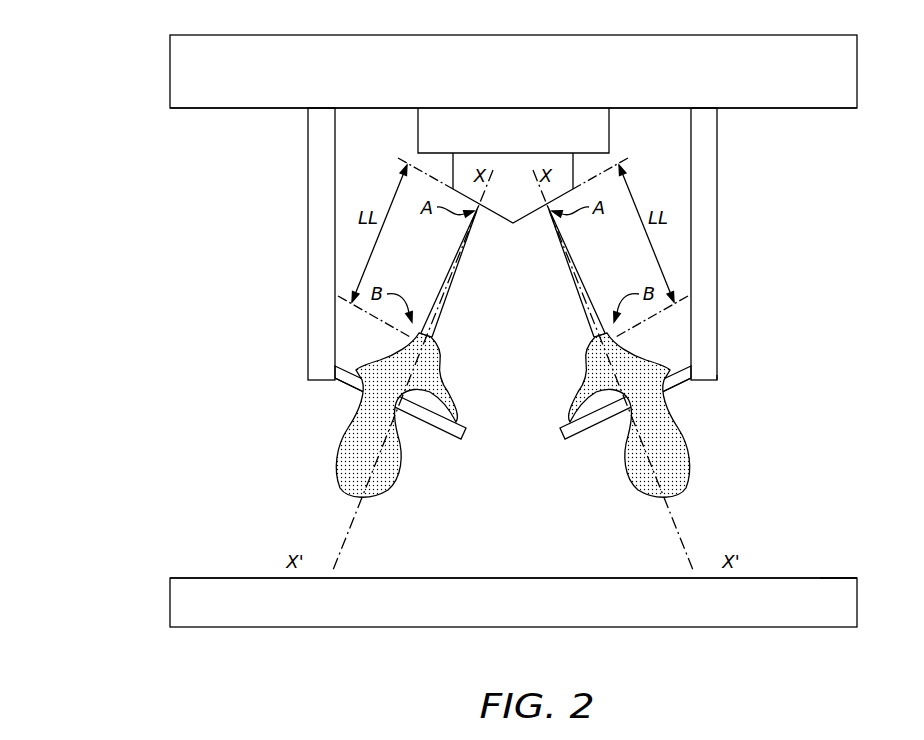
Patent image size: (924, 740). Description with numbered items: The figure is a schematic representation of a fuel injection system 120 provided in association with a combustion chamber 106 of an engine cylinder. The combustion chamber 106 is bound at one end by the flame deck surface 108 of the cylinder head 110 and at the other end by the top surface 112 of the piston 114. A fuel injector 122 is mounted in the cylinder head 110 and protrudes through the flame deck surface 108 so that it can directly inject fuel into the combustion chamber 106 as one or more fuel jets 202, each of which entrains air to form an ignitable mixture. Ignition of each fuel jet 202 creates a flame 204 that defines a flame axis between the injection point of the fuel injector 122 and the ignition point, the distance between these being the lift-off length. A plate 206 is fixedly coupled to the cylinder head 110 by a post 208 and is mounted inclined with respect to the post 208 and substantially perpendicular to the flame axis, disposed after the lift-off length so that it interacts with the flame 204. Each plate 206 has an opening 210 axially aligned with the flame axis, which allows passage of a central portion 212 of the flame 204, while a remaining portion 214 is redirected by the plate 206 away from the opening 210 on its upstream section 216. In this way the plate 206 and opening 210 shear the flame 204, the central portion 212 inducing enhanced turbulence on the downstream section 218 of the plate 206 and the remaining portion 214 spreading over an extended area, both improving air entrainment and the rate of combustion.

The combustion chamber 106 is at (499, 565).
The flame deck surface 108 is at (822, 108).
The cylinder head 110 is at (499, 85).
The top surface 112 is at (828, 578).
The piston 114 is at (499, 615).
The fuel injection system 120 is at (727, 370).
The fuel injector 122 is at (499, 139).
The fuel jet 202 is at (458, 278).
The flame 204 is at (377, 362).
The plate 206 is at (348, 380).
The post 208 is at (308, 148).
The opening 210 is at (370, 396).
The central portion 212 is at (404, 459).
The remaining portion 214 is at (447, 403).
The upstream section 216 is at (388, 346).
The downstream section 218 is at (338, 439).